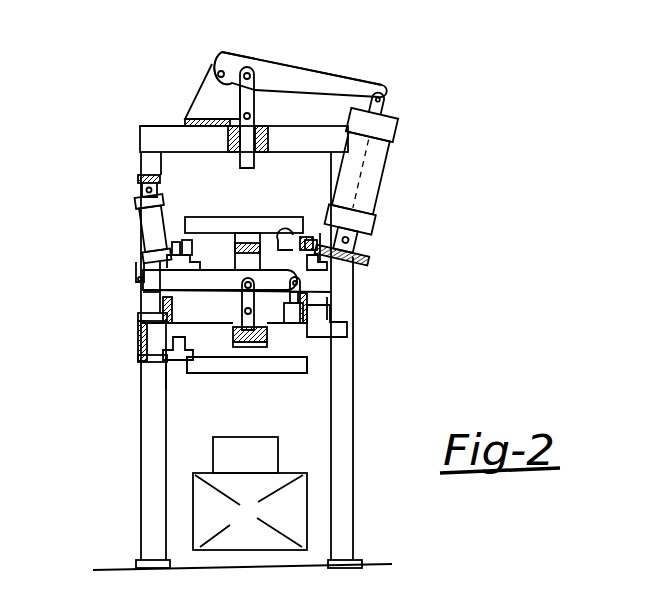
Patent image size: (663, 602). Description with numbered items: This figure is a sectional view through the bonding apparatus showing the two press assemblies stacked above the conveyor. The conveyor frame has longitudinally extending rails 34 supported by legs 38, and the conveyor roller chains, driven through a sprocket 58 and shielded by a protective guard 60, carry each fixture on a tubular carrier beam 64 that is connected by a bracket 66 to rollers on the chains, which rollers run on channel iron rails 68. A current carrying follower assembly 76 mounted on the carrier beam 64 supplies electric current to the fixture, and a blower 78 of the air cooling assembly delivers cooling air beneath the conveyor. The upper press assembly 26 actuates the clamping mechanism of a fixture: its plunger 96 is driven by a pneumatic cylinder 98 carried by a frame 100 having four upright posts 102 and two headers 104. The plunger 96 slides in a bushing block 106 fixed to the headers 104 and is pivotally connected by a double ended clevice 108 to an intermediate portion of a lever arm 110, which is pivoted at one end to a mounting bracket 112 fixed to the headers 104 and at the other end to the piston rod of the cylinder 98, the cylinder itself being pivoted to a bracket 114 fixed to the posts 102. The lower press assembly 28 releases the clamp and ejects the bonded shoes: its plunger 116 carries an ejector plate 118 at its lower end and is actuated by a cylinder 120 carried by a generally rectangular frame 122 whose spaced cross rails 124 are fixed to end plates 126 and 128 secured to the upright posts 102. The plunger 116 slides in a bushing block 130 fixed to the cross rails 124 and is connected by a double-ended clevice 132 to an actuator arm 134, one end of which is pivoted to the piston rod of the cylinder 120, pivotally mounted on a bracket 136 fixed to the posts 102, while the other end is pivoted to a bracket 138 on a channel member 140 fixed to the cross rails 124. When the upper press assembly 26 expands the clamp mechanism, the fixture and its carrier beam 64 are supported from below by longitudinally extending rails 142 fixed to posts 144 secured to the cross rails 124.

The press assembly 26 is at (213, 54).
The press assembly 28 is at (132, 271).
The rails 34 is at (165, 356).
The legs 38 is at (145, 461).
The sprocket 58 is at (280, 232).
The protective guard 60 is at (350, 262).
The tubular carrier beam 64 is at (223, 216).
The bracket 66 is at (140, 357).
The channel iron rails 68 is at (167, 378).
The current carrying follower assembly 76 is at (193, 518).
The blower 78 is at (281, 449).
The plunger 96 is at (249, 184).
The pneumatic cylinder 98 is at (385, 155).
The frame 100 is at (135, 158).
The upright posts 102 is at (355, 245).
The headers 104 is at (138, 127).
The bushing block 106 is at (188, 126).
The double ended clevice 108 is at (300, 60).
The lever arm 110 is at (258, 86).
The mounting bracket 112 is at (207, 88).
The bracket 114 is at (352, 240).
The plunger 116 is at (228, 348).
The ejector plate 118 is at (247, 360).
The cylinder 120 is at (133, 225).
The rectangular frame 122 is at (335, 327).
The cross rails 124 is at (158, 296).
The end plate 126 is at (142, 323).
The end plate 128 is at (350, 287).
The bushing block 130 is at (330, 360).
The double-ended clevice 132 is at (240, 302).
The actuator arm 134 is at (135, 263).
The bracket 136 is at (137, 178).
The bracket 138 is at (345, 277).
The channel member 140 is at (340, 345).
The rails 142 is at (218, 249).
The posts 144 is at (375, 195).